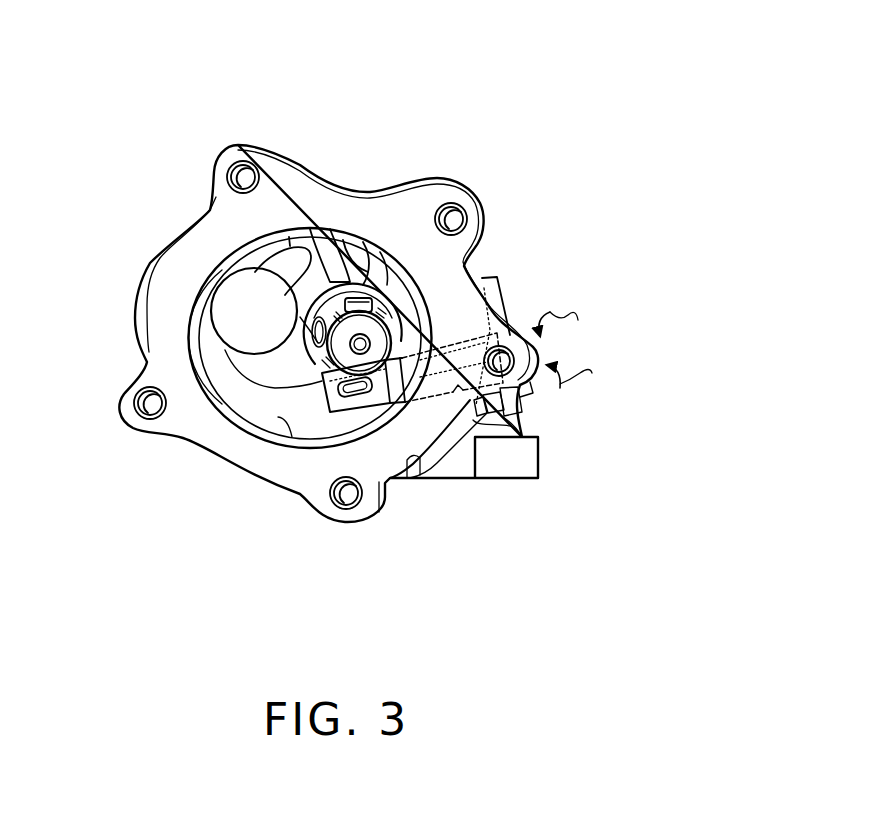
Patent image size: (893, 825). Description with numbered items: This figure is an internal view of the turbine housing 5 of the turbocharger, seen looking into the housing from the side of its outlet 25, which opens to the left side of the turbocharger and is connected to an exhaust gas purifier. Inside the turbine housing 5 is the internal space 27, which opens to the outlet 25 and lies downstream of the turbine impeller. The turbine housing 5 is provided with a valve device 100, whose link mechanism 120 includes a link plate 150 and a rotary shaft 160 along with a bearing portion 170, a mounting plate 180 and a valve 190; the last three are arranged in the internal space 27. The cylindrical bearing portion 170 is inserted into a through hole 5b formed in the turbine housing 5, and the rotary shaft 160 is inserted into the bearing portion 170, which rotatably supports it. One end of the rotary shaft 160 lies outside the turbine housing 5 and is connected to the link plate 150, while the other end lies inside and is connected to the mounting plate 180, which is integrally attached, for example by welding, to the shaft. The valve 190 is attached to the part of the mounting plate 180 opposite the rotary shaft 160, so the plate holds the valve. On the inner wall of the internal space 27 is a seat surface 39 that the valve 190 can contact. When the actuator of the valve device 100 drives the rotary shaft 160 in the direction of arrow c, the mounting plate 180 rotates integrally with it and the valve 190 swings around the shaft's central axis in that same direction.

The turbine housing 5 is at (256, 69).
The through hole 5b is at (475, 410).
The outlet 25 is at (278, 417).
The internal space 27 is at (264, 382).
The seat surface 39 is at (403, 312).
The valve device 100 is at (669, 172).
The link mechanism 120 is at (607, 244).
The link plate 150 is at (503, 302).
The rotary shaft 160 is at (367, 398).
The bearing portion 170 is at (432, 325).
The mounting plate 180 is at (330, 377).
The valve 190 is at (302, 321).